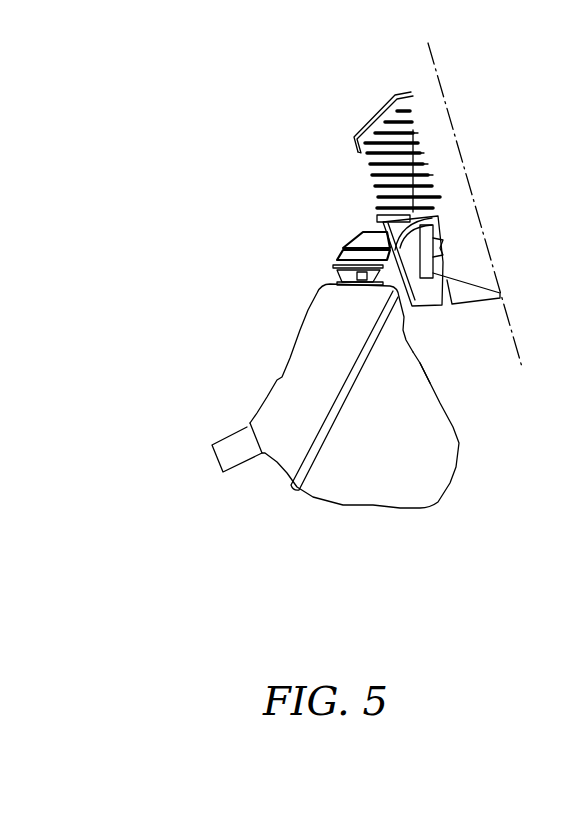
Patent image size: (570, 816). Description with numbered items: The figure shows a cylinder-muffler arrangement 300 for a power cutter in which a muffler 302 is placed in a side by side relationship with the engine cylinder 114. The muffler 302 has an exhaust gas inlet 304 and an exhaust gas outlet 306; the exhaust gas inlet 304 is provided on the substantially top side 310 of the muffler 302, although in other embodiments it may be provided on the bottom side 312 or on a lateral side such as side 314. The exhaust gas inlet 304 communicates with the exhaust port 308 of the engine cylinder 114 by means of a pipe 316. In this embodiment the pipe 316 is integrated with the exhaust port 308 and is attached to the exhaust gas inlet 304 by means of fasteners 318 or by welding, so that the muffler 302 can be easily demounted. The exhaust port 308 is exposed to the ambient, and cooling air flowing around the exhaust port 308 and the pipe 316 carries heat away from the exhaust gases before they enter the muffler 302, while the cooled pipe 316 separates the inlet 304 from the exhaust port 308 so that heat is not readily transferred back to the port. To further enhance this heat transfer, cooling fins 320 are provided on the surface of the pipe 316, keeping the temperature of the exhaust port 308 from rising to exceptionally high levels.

The cylinder-muffler arrangement 300 is at (92, 54).
The engine cylinder 114 is at (420, 142).
The muffler 302 is at (260, 382).
The exhaust gas inlet 304 is at (338, 272).
The exhaust gas outlet 306 is at (243, 480).
The exhaust port 308 is at (447, 278).
The top side 310 is at (330, 285).
The bottom side 312 is at (387, 507).
The side wall 314 is at (417, 367).
The pipe 316 is at (353, 250).
The fasteners 318 is at (362, 262).
The cooling fins 320 is at (363, 230).